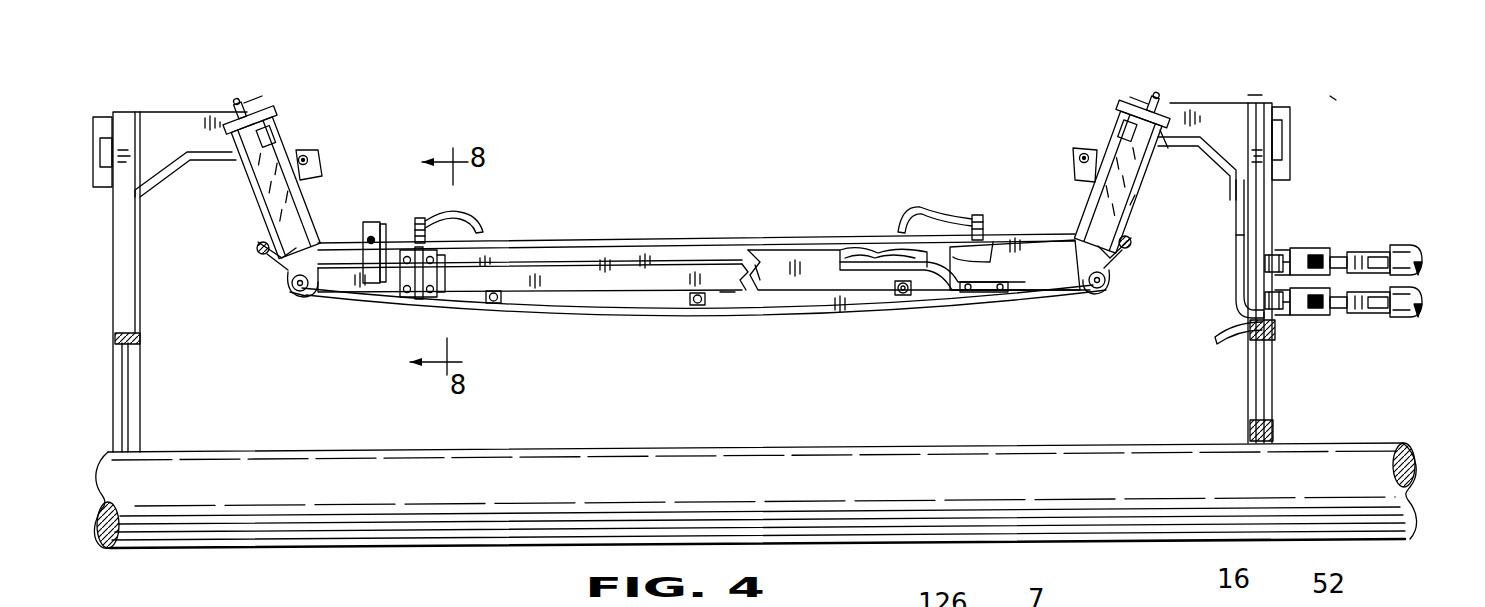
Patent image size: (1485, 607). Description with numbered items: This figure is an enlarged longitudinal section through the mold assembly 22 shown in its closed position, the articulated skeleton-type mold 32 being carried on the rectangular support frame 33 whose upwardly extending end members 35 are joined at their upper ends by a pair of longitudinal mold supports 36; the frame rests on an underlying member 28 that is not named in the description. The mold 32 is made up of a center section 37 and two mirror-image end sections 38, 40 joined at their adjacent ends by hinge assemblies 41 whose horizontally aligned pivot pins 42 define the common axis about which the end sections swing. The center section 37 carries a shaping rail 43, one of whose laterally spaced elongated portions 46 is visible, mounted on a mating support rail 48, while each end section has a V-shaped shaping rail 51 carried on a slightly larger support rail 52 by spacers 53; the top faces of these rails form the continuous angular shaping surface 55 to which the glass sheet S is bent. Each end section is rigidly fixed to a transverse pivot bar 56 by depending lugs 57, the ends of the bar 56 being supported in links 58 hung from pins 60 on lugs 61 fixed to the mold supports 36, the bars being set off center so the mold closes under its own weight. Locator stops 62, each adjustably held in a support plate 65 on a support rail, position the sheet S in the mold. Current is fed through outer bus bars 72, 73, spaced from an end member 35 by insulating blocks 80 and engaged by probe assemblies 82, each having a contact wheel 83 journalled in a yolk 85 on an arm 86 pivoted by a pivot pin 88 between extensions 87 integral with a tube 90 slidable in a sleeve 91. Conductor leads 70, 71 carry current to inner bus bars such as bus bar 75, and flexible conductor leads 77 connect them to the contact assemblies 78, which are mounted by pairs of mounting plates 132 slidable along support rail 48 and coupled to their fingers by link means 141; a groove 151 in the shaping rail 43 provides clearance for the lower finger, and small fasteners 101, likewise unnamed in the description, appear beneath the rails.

The mold assembly 22 is at (1335, 93).
The support bar 28 is at (322, 462).
The skeleton-type mold 32 is at (1040, 288).
The support frame 33 is at (1262, 92).
The end member 35 is at (138, 370).
The mold support 36 is at (838, 300).
The center section 37 is at (727, 305).
The end section 38 is at (1150, 215).
The end section 40 is at (242, 188).
The hinge assembly 41 is at (288, 290).
The pivot pin 42 is at (302, 292).
The shaping rail 43 is at (760, 278).
The elongated portion 46 is at (965, 244).
The support rail 48 is at (585, 292).
The shaping rail 51 is at (1142, 200).
The support rail 52 is at (245, 162).
The spacer 53 is at (1152, 148).
The shaping surface 55 is at (322, 240).
The pivot bar 56 is at (258, 248).
The lug 57 is at (292, 262).
The link 58 is at (315, 176).
The pin 60 is at (312, 158).
The lug 61 is at (303, 156).
The locator stop 62 is at (282, 103).
The support plate 65 is at (372, 265).
The conductor lead 70 is at (940, 280).
The conductor lead 71 is at (1215, 338).
The outer bus bar 72 is at (1240, 235).
The outer bus bar 73 is at (1255, 328).
The bus bar 75 is at (850, 260).
The flexible conductor lead 77 is at (485, 212).
The contact assembly 78 is at (418, 212).
The insulating block 80 is at (1283, 205).
The probe assembly 82 is at (1405, 238).
The contact wheel 83 is at (1300, 250).
The yolk 85 is at (1318, 245).
The arm 86 is at (1336, 252).
The extension 87 is at (1376, 252).
The pivot pin 88 is at (1350, 250).
The tube 90 is at (1388, 248).
The sleeve 91 is at (1428, 245).
The bolt 101 is at (698, 302).
The mounting plate 132 is at (403, 277).
The link means 141 is at (440, 268).
The groove 151 is at (992, 262).
The glass sheet S is at (620, 248).